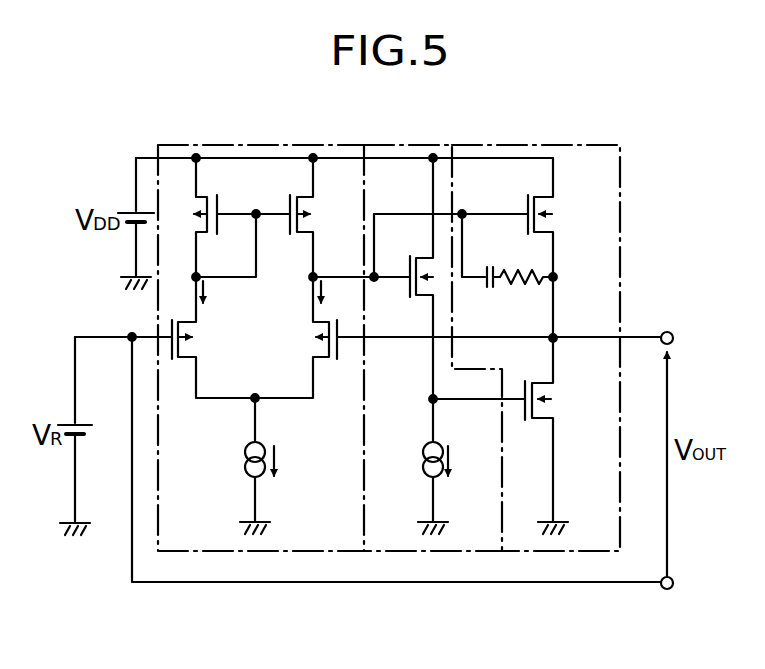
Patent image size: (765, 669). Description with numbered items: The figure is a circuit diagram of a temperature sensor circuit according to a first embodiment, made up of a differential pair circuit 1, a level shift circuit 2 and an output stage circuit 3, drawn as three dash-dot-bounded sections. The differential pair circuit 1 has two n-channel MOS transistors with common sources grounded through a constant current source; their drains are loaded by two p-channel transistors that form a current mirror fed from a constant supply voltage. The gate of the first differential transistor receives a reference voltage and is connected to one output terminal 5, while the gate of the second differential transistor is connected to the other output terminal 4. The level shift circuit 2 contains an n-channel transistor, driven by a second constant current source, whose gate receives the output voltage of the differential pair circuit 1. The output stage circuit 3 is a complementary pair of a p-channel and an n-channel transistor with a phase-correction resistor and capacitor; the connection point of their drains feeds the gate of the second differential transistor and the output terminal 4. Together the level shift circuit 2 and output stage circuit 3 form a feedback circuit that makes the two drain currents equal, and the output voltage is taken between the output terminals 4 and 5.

The differential pair circuit 1 is at (176, 540).
The level shift circuit 2 is at (390, 543).
The output stage circuit 3 is at (525, 542).
The output terminal 4 is at (668, 331).
The output terminal 5 is at (668, 590).